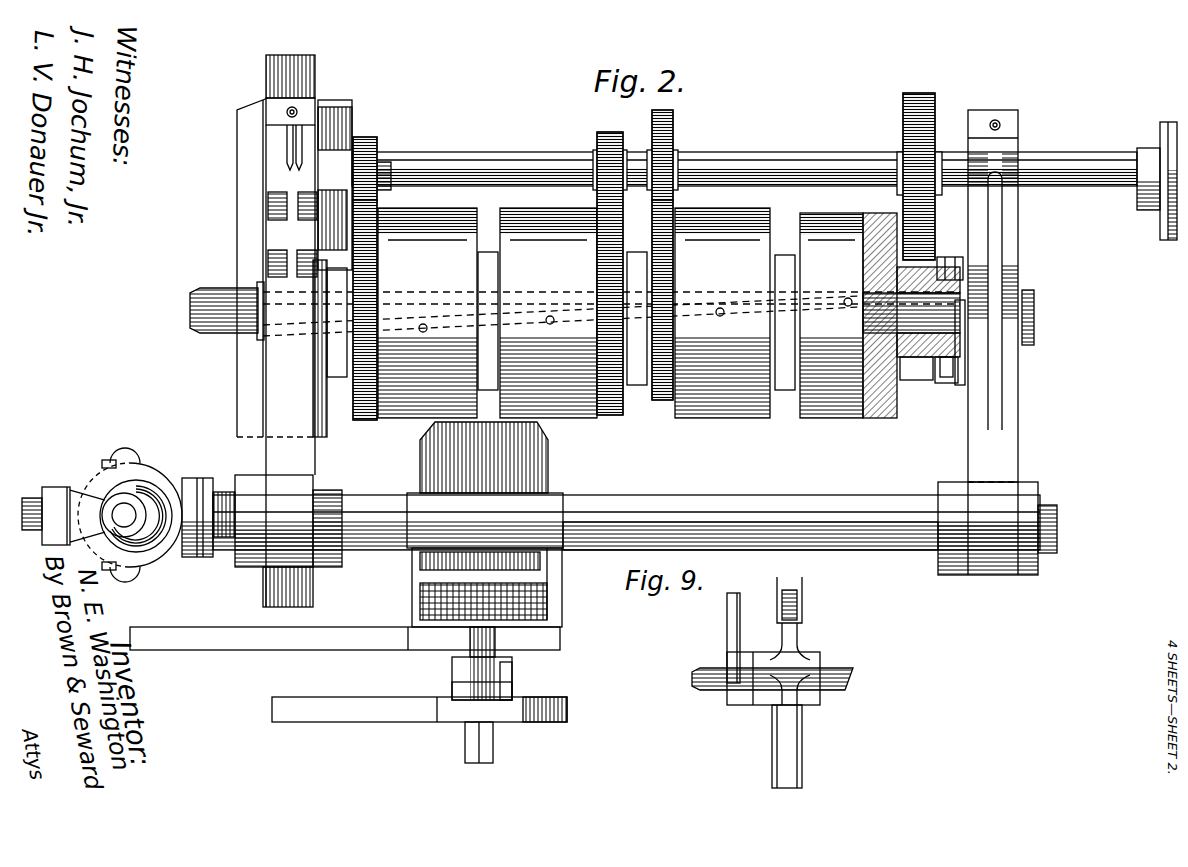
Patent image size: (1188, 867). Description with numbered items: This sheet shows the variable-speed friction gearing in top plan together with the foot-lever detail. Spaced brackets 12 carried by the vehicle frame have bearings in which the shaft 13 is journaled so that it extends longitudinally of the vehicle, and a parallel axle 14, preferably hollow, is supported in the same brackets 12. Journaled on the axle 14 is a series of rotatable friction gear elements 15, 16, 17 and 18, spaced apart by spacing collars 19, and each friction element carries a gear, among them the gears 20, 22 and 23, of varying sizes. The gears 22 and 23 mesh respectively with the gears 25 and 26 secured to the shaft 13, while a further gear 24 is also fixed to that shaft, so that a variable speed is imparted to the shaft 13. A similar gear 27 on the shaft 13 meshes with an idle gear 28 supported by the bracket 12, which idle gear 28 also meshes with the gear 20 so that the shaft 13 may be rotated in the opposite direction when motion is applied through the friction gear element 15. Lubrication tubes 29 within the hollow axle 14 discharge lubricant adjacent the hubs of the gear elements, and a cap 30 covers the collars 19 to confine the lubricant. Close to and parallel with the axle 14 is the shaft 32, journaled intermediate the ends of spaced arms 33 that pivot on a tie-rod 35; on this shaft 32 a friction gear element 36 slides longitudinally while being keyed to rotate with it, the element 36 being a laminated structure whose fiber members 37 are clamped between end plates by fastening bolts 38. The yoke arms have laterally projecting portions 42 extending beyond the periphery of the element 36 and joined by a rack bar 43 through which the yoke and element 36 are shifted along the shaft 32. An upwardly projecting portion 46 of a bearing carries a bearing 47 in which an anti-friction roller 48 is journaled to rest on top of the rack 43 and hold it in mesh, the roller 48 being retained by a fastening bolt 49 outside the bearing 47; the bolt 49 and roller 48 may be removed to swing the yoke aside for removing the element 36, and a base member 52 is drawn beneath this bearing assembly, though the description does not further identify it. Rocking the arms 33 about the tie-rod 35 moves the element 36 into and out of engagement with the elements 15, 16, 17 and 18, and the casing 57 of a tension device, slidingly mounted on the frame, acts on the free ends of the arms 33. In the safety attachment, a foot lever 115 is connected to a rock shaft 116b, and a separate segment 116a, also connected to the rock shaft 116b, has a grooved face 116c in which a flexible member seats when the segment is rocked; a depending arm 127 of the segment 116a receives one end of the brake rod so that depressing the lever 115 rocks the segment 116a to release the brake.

In FIG. 2, the bracket 12 is at (275, 400).
In FIG. 2, the shaft 13 is at (752, 166).
In FIG. 2, the axle 14 is at (1030, 330).
In FIG. 2, the friction gear element 15 is at (433, 221).
In FIG. 2, the friction gear element 16 is at (528, 224).
In FIG. 2, the friction gear element 17 is at (712, 226).
In FIG. 2, the friction gear element 18 is at (824, 228).
In FIG. 2, the spacing collar 19 is at (937, 383).
In FIG. 2, the gear 20 is at (366, 420).
In FIG. 2, the gear 22 is at (660, 400).
In FIG. 2, the gear 23 is at (912, 378).
In FIG. 2, the gear 24 is at (610, 133).
In FIG. 2, the gear 25 is at (675, 114).
In FIG. 2, the gear 26 is at (905, 104).
In FIG. 2, the gear 27 is at (368, 136).
In FIG. 2, the idle gear 28 is at (388, 176).
In FIG. 2, the lubrication tube 29 is at (198, 326).
In FIG. 2, the cap 30 is at (490, 300).
In FIG. 2, the shaft 32 is at (838, 552).
In FIG. 2, the arm 33 is at (245, 560).
In FIG. 2, the tie-rod 35 is at (796, 502).
In FIG. 2, the friction gear element 36 is at (548, 485).
In FIG. 2, the fiber member 37 is at (428, 470).
In FIG. 2, the fastening bolt 38 is at (548, 608).
In FIG. 2, the laterally projecting portion 42 is at (407, 580).
In FIG. 2, the rack bar 43 is at (348, 641).
In FIG. 2, the upwardly projecting portion 46 is at (455, 692).
In FIG. 2, the bearing 47 is at (462, 676).
In FIG. 2, the anti-friction roller 48 is at (497, 642).
In FIG. 2, the fastening bolt 49 is at (512, 690).
In FIG. 2, the base plate 52 is at (420, 712).
In FIG. 2, the casing 57 is at (240, 172).
In FIG. 9, the foot lever 115 is at (735, 626).
In FIG. 9, the segment 116a is at (805, 603).
In FIG. 9, the rock shaft 116b is at (846, 676).
In FIG. 9, the grooved face 116c is at (790, 590).
In FIG. 9, the depending arm 127 is at (786, 756).